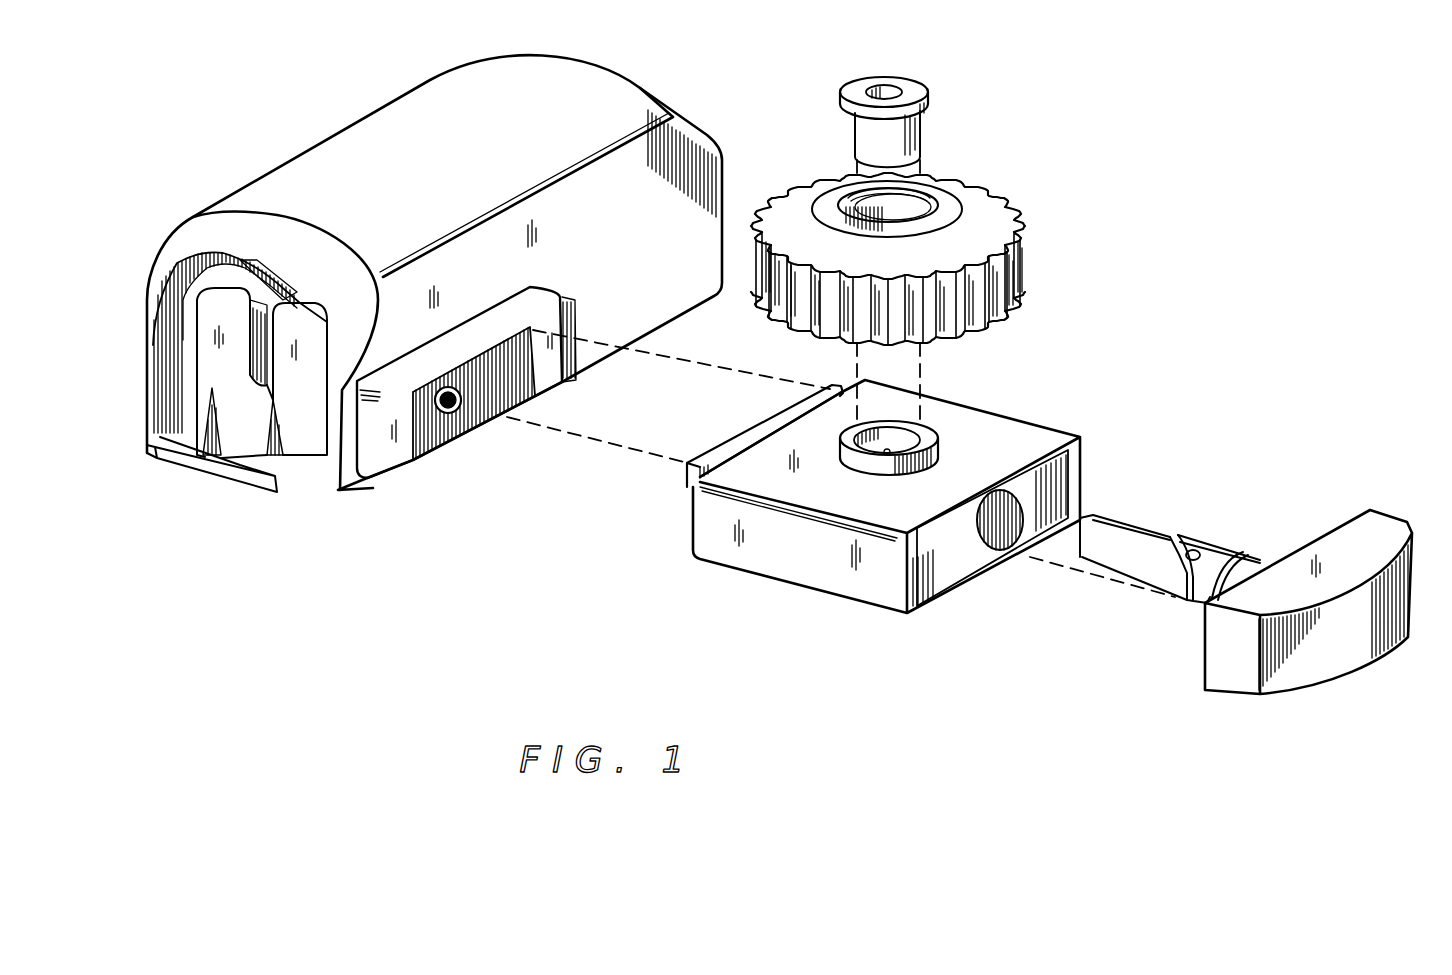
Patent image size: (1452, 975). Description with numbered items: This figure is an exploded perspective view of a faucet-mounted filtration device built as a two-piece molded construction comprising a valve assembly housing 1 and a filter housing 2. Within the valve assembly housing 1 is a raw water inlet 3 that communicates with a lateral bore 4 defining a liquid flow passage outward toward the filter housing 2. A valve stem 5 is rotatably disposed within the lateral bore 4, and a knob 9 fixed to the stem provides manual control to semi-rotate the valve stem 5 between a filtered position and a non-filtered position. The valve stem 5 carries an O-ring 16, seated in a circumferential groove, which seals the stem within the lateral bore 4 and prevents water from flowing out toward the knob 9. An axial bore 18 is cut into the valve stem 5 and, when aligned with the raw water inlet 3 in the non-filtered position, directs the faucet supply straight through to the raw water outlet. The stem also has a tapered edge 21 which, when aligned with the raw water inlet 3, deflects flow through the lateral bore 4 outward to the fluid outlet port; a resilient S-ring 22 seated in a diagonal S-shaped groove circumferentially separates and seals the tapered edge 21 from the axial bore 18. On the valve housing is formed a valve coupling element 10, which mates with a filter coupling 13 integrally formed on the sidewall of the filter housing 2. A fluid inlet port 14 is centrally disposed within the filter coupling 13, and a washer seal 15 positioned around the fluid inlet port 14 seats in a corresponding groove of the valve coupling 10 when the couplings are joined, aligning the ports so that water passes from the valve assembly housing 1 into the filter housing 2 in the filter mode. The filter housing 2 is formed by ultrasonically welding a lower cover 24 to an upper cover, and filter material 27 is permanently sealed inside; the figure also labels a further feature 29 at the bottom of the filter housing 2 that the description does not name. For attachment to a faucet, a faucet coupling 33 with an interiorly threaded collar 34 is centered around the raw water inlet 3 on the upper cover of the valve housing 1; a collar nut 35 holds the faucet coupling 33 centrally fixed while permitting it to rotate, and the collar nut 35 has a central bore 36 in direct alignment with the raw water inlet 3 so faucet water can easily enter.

The valve assembly housing 1 is at (1018, 420).
The filter housing 2 is at (388, 118).
The raw water inlet 3 is at (905, 437).
The lateral bore 4 is at (1008, 552).
The valve stem 5 is at (1258, 560).
The knob 9 is at (1405, 525).
The valve coupling element 10 is at (700, 473).
The filter coupling 13 is at (393, 467).
The fluid inlet port 14 is at (458, 408).
The washer seal 15 is at (441, 453).
The O-ring 16 is at (1243, 550).
The axial bore 18 is at (1197, 550).
The tapered edge 21 is at (1146, 572).
The S-ring 22 is at (1170, 535).
The lower cover 24 is at (250, 482).
The filter material 27 is at (292, 395).
The legs 29 is at (240, 470).
The faucet coupling 33 is at (980, 230).
The interiorly threaded collar 34 is at (927, 193).
The collar nut 35 is at (920, 85).
The central bore 36 is at (888, 80).